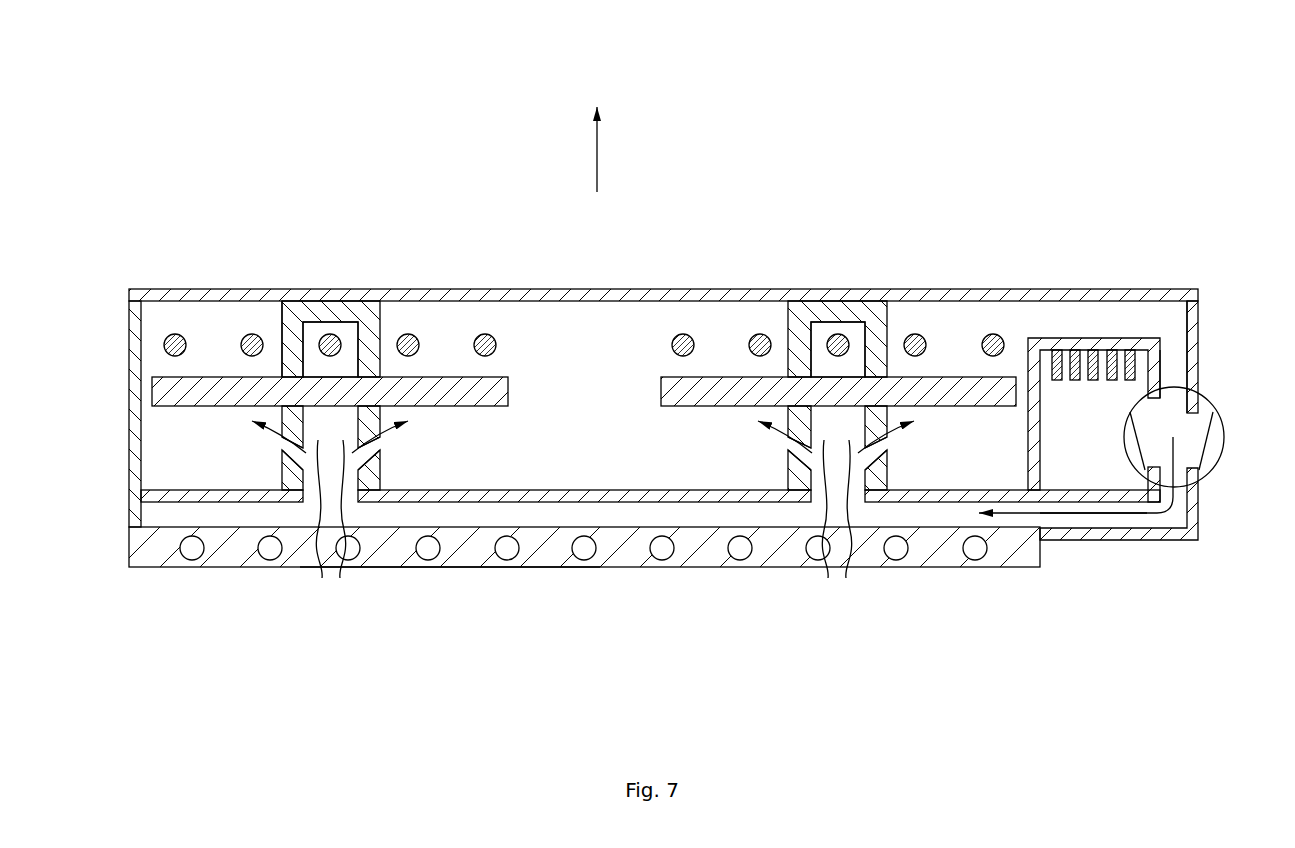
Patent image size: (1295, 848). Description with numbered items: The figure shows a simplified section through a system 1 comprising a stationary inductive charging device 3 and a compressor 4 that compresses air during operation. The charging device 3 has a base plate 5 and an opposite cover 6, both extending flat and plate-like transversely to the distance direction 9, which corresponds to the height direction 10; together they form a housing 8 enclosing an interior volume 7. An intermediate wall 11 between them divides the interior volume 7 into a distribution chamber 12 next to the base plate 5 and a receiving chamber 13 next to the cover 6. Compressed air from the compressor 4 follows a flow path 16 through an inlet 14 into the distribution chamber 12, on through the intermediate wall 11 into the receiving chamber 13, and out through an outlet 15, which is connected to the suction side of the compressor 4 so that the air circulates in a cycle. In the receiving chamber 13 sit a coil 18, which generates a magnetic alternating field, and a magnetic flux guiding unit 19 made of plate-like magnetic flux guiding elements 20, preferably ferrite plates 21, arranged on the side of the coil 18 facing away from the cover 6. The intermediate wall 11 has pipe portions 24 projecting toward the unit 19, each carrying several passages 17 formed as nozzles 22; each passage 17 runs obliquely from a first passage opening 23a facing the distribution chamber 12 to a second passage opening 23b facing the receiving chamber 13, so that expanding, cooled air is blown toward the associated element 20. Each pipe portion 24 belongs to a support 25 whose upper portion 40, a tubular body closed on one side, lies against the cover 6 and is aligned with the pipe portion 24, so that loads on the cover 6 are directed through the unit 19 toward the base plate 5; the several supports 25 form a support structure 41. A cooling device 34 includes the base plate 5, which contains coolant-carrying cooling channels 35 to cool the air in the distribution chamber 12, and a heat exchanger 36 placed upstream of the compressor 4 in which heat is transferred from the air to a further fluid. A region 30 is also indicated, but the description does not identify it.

The system 1 is at (1088, 165).
The stationary inductive charging device 3 is at (504, 166).
The compressor 4 is at (1226, 437).
The base plate 5 is at (584, 597).
The cover 6 is at (551, 289).
The interior volume 7 is at (599, 493).
The housing 8 is at (440, 569).
The distance direction 9 is at (648, 149).
The height direction 10 is at (597, 153).
The intermediate wall 11 is at (546, 504).
The distribution chamber 12 is at (650, 550).
The receiving chamber 13 is at (527, 414).
The inlet 14 is at (1038, 520).
The outlet 15 is at (1172, 392).
The flow path 16 is at (1145, 558).
The passage 17 is at (580, 456).
The coil 18 is at (162, 345).
The magnetic flux guiding unit 19 is at (149, 390).
The magnetic flux guiding element 20 is at (762, 391).
The ferrite plate 21 is at (508, 395).
The nozzle 22 is at (302, 464).
The first passage opening 23a is at (583, 494).
The second passage opening 23b is at (302, 452).
The pipe portion 24 is at (368, 482).
The support 25 is at (327, 298).
The surroundings 30 is at (1275, 321).
The cooling device 34 is at (576, 629).
The cooling channels 35 is at (665, 552).
The heat exchanger 36 is at (1092, 336).
The upper portion 40 is at (384, 328).
The support structure 41 is at (270, 311).